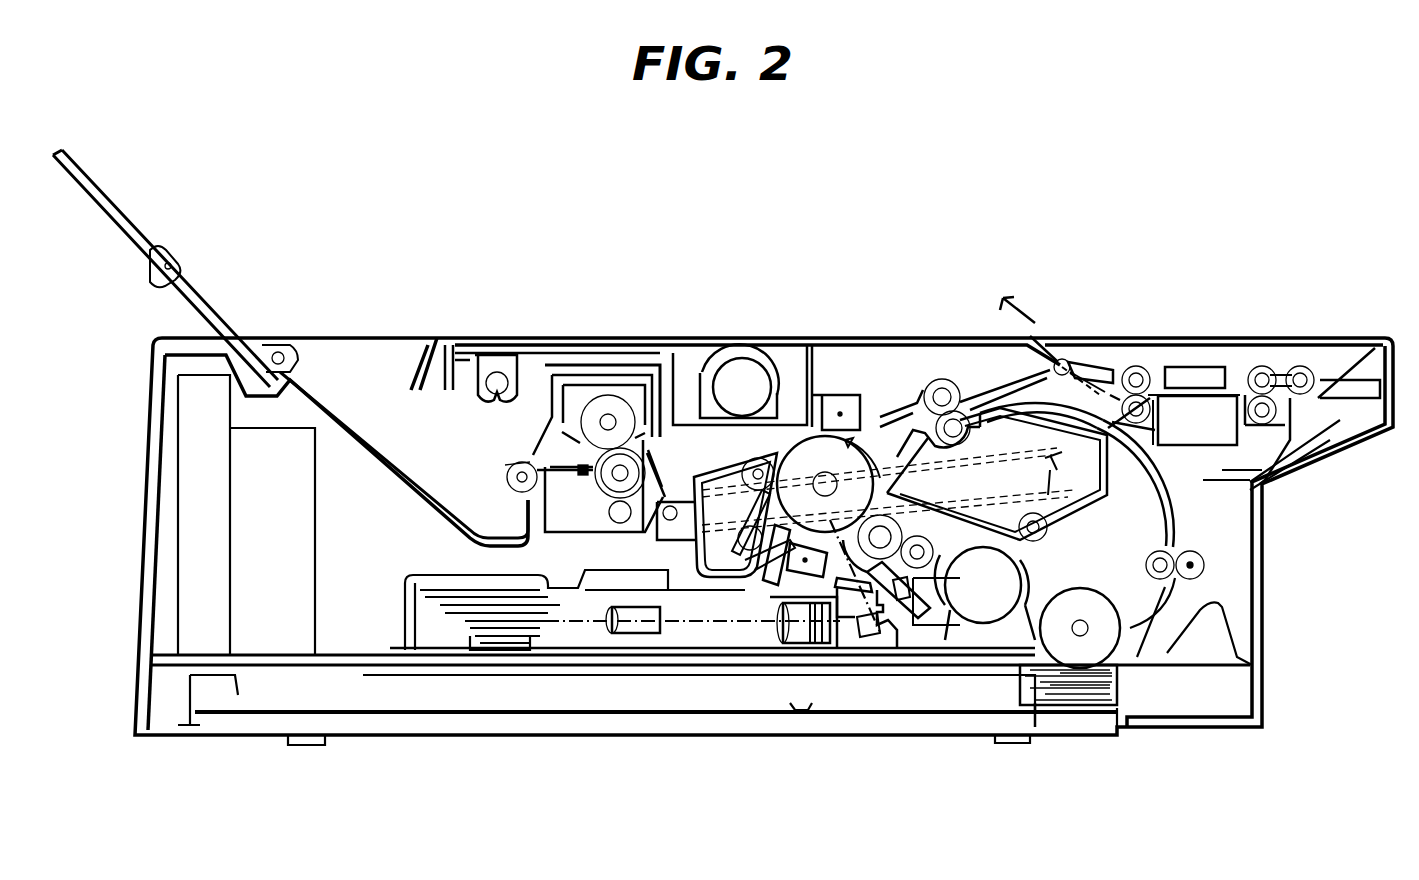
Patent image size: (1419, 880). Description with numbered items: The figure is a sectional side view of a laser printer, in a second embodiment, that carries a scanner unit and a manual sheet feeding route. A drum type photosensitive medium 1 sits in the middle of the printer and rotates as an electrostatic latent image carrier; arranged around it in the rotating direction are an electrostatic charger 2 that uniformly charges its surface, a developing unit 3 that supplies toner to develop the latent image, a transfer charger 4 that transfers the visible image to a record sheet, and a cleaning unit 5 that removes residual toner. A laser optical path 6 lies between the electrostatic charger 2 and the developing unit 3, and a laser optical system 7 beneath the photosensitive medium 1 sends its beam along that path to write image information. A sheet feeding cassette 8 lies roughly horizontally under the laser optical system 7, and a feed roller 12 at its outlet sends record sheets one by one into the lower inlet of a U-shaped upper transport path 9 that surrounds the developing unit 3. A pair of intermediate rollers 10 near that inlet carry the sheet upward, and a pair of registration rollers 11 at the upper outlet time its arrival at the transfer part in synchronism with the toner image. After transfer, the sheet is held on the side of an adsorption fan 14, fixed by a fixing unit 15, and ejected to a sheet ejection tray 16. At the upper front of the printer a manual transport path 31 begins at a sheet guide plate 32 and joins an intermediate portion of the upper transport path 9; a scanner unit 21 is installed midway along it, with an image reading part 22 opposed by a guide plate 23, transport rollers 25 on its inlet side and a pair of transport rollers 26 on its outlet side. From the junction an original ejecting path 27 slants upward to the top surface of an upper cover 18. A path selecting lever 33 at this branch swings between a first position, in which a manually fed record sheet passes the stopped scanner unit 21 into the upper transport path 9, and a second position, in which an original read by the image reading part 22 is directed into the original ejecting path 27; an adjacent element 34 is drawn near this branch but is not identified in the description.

The photosensitive medium 1 is at (812, 466).
The electrostatic charger 2 is at (768, 590).
The developing unit 3 is at (968, 620).
The transfer charger 4 is at (848, 410).
The cleaning unit 5 is at (695, 545).
The laser optical path 6 is at (842, 548).
The laser optical system 7 is at (895, 632).
The sheet feeding cassette 8 is at (922, 695).
The upper transport path 9 is at (1015, 418).
The intermediate rollers 10 is at (1200, 568).
The registration rollers 11 is at (958, 387).
The feed roller 12 is at (1087, 595).
The adsorption fan 14 is at (725, 365).
The fixing unit 15 is at (548, 402).
The sheet ejection tray 16 is at (340, 418).
The upper cover 18 is at (905, 335).
The scanner unit 21 is at (1198, 353).
The image reading part 22 is at (1192, 440).
The guide plate 23 is at (1225, 365).
The transport rollers 25 is at (1265, 365).
The transport rollers 26 is at (1140, 368).
The original ejecting path 27 is at (1060, 358).
The manual transport path 31 is at (1290, 400).
The sheet guide plate 32 is at (1340, 385).
The path selecting lever 33 is at (1100, 365).
The arm 34 is at (1070, 362).